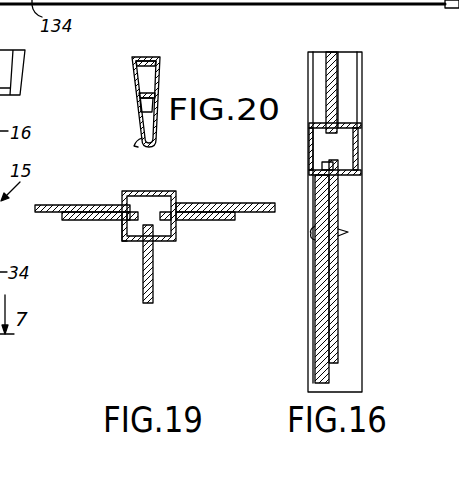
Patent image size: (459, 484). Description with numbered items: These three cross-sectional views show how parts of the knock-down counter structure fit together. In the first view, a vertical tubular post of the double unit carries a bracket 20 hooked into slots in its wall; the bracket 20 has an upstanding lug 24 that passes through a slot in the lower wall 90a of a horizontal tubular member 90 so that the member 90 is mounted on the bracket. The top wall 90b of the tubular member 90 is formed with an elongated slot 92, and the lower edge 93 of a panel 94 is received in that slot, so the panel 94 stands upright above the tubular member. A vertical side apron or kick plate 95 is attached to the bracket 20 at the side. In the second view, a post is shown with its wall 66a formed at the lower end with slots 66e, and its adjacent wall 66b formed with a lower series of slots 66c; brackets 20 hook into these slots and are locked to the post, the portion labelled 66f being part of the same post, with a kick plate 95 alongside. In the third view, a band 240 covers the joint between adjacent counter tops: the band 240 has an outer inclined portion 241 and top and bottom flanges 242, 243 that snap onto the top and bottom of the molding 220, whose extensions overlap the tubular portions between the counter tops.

In FIG. 20, the band 240 is at (167, 73).
In FIG. 20, the top flange 242 is at (137, 58).
In FIG. 20, the outer inclined portion 241 is at (153, 102).
In FIG. 20, the molding 220 is at (140, 112).
In FIG. 19, the kick plate 95 is at (50, 204).
In FIG. 16, the kick plate 95 is at (318, 305).
In FIG. 19, the bottom flange 243 is at (133, 148).
In FIG. 19, the housing 66f is at (148, 182).
In FIG. 19, the slots 66c is at (152, 237).
In FIG. 19, the slots 66e is at (124, 218).
In FIG. 19, the post wall 66a is at (124, 230).
In FIG. 19, the post wall 66b is at (163, 242).
In FIG. 19, the bracket 20 is at (75, 219).
In FIG. 16, the bracket 20 is at (338, 280).
In FIG. 16, the horizontal tubular member 90 is at (368, 139).
In FIG. 16, the panel 94 is at (352, 57).
In FIG. 16, the elongated slot 92 is at (326, 112).
In FIG. 16, the top wall 90b is at (346, 128).
In FIG. 16, the lower edge 93 is at (313, 135).
In FIG. 16, the lug 24 is at (320, 165).
In FIG. 16, the lower wall 90a is at (350, 178).